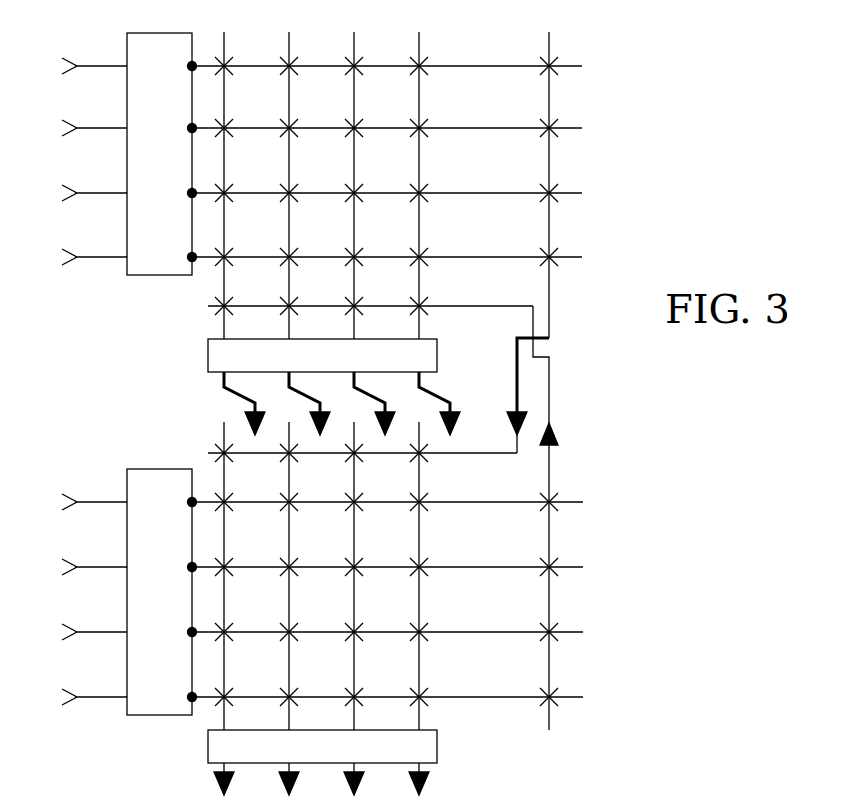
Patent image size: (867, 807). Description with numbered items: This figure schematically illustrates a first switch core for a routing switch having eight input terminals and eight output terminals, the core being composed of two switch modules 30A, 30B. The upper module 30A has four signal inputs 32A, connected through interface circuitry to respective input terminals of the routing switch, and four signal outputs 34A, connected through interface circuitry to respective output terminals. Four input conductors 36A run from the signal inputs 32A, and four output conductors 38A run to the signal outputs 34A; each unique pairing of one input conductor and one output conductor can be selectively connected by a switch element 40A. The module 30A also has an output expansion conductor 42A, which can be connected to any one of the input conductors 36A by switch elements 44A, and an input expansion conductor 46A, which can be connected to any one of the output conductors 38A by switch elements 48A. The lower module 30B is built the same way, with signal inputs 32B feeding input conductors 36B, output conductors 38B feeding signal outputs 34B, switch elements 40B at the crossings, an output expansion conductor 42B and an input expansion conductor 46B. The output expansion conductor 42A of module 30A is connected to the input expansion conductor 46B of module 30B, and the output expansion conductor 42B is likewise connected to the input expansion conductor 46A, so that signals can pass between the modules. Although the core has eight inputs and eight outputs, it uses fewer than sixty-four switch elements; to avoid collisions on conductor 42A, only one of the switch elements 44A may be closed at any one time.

The switch module 30A is at (638, 97).
The signal inputs 32A is at (211, 256).
The signal outputs 34A is at (290, 323).
The input conductors 36A is at (328, 67).
The output conductors 38A is at (419, 52).
The switch element 40A is at (226, 60).
The output expansion conductor 42A is at (549, 225).
The switch elements 44A is at (554, 133).
The input expansion conductor 46A is at (456, 306).
The switch elements 48A is at (218, 308).
The switch module 30B is at (628, 535).
The signal inputs 32B is at (193, 497).
The signal outputs 34B is at (354, 715).
The input conductors 36B is at (378, 584).
The output conductors 38B is at (290, 548).
The switch element 40B is at (421, 640).
The output expansion conductor 42B is at (549, 611).
The input expansion conductor 46B is at (453, 454).